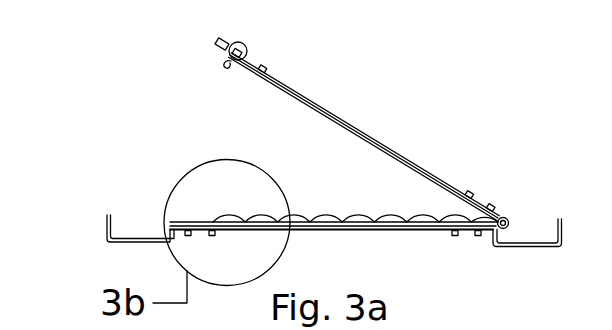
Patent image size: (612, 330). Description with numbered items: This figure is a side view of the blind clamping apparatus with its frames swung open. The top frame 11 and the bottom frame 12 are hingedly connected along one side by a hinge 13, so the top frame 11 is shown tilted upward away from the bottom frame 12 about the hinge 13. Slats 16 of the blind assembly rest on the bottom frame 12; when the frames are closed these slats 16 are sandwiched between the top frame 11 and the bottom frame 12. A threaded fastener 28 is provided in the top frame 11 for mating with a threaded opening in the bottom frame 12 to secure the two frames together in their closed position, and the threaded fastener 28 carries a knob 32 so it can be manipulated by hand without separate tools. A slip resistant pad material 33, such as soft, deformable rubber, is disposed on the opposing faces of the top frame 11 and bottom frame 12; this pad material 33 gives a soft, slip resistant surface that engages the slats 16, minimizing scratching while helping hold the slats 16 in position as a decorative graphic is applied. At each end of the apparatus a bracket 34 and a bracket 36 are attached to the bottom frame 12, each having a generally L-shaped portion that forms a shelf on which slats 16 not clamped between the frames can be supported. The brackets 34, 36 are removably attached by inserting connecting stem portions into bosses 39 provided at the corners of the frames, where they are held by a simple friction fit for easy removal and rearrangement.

The top frame 11 is at (364, 134).
The bottom frame 12 is at (335, 231).
The hinge 13 is at (509, 218).
The slats 16 is at (268, 221).
The threaded fastener 28 is at (225, 66).
The knob 32 is at (253, 44).
The slip resistant pad material 33 is at (303, 106).
The right bracket 34 is at (543, 249).
The right bracket 36 is at (117, 244).
The boss 39 is at (467, 189).